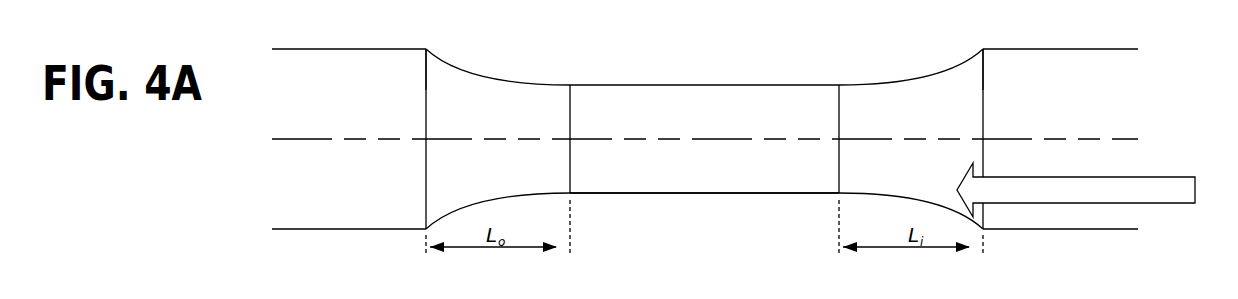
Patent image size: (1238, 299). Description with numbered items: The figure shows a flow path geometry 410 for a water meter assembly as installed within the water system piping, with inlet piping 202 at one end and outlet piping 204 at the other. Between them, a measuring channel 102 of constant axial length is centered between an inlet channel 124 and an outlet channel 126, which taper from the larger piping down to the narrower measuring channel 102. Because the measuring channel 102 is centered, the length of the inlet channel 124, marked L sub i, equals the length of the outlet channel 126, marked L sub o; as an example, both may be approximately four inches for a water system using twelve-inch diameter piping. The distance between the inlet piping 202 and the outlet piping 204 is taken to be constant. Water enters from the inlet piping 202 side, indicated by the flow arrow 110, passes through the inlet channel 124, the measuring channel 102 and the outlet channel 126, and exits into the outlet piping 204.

The measuring channel 102 is at (773, 195).
The flow direction 110 is at (1076, 190).
The inlet channel 124 is at (988, 81).
The outlet channel 126 is at (423, 80).
The inlet piping 202 is at (1113, 230).
The outlet piping 204 is at (310, 230).
The flow path geometry 410 is at (557, 51).